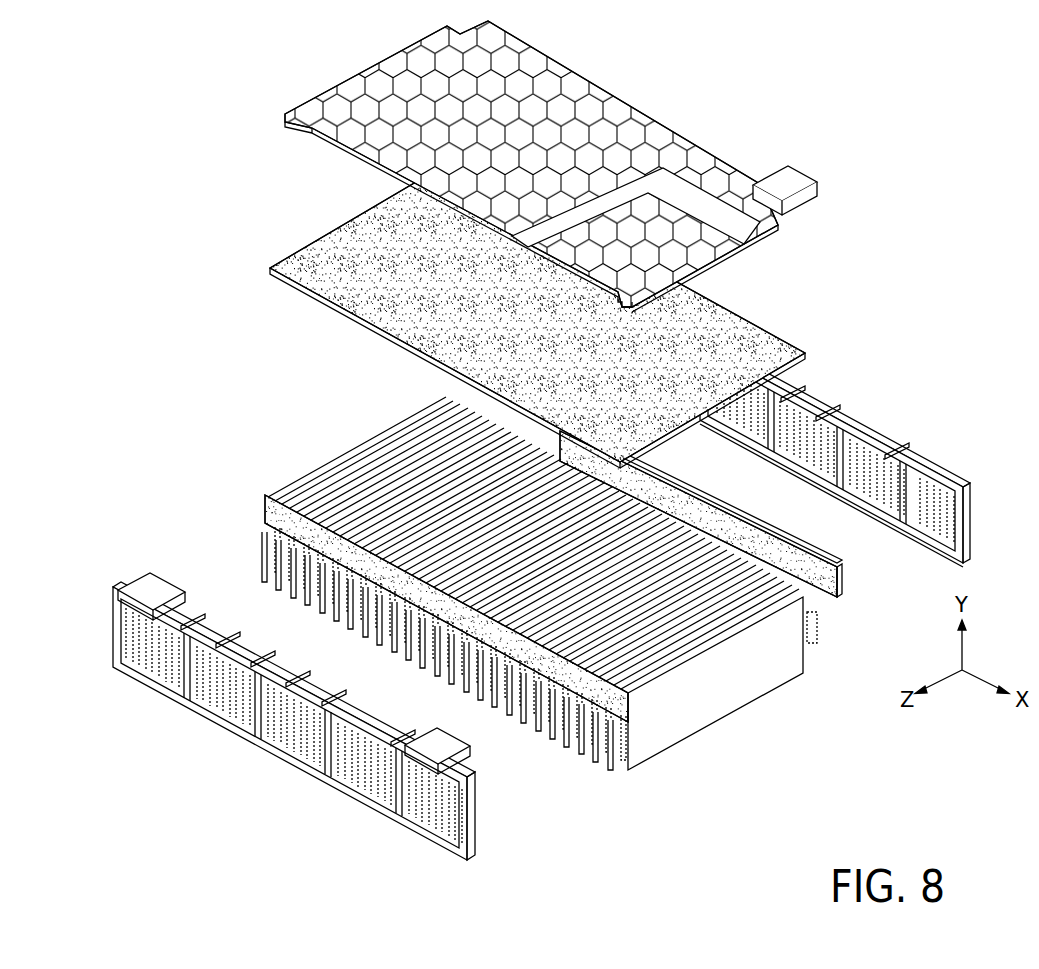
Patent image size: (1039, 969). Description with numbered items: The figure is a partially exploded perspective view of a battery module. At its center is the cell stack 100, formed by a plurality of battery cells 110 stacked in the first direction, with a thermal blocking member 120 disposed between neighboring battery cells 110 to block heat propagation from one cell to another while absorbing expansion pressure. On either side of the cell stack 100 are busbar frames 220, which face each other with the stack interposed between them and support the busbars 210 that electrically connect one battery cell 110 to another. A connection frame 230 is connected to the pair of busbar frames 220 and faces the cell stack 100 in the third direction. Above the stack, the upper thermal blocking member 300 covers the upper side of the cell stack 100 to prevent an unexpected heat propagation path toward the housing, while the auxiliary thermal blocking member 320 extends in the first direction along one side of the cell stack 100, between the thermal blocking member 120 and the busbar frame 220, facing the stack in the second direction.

The cell stack 100 is at (553, 609).
The battery cell 110 is at (660, 737).
The thermal blocking member 120 is at (577, 757).
The busbar 210 is at (185, 690).
The busbar frame 220 is at (968, 470).
The connection frame 230 is at (360, 93).
The upper thermal blocking member 300 is at (340, 293).
The auxiliary thermal blocking member 320 is at (553, 600).